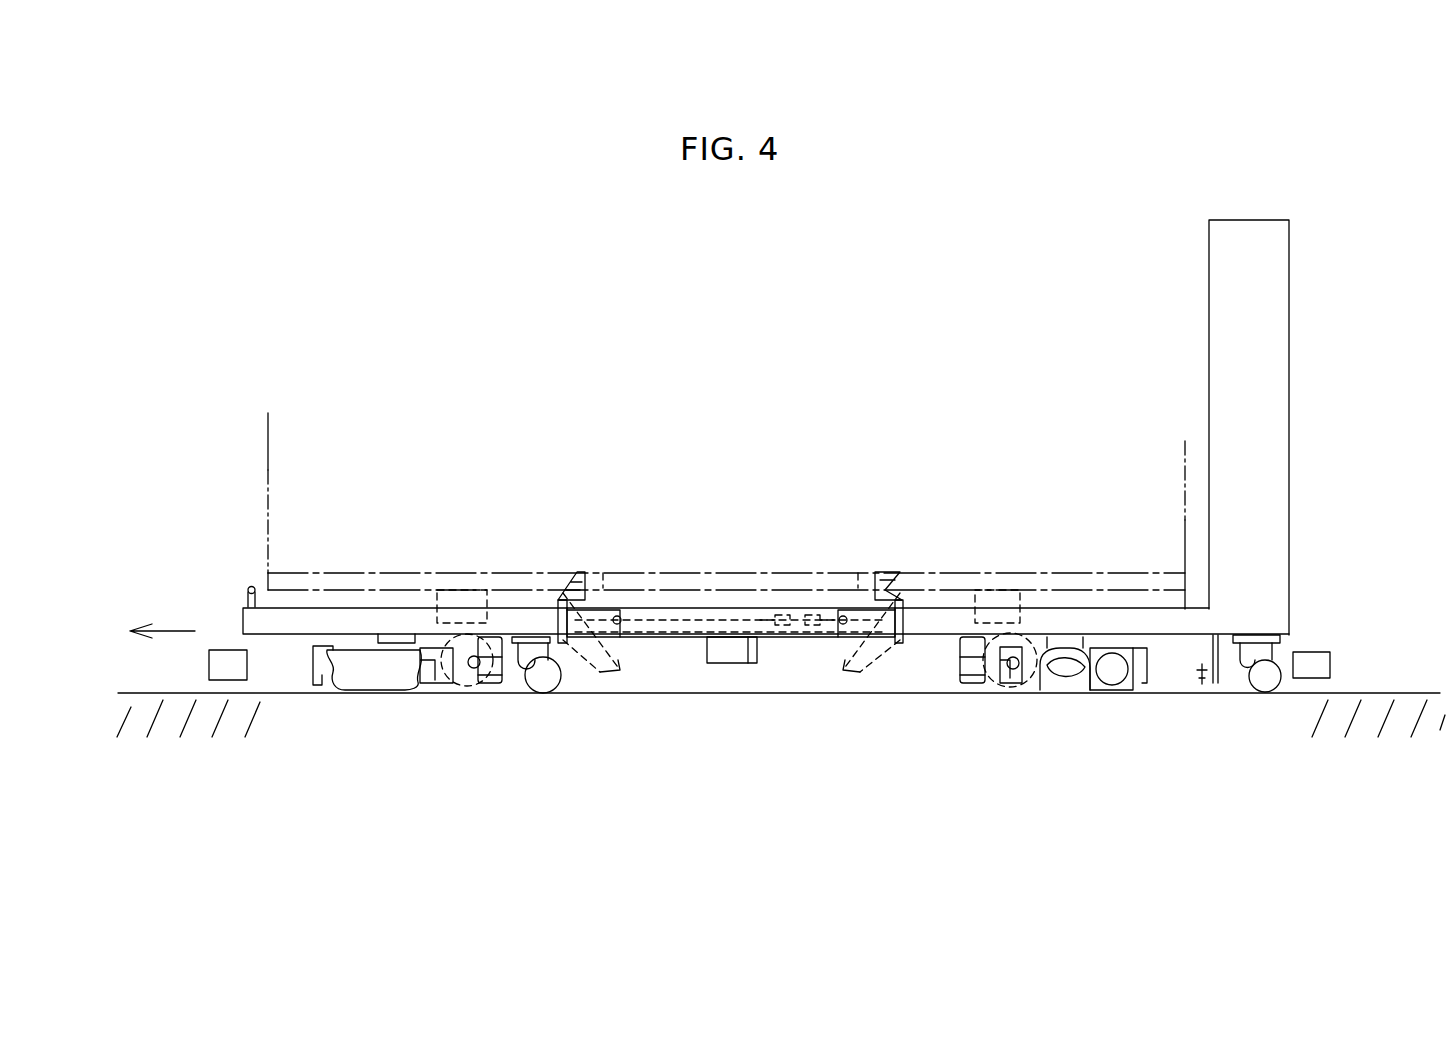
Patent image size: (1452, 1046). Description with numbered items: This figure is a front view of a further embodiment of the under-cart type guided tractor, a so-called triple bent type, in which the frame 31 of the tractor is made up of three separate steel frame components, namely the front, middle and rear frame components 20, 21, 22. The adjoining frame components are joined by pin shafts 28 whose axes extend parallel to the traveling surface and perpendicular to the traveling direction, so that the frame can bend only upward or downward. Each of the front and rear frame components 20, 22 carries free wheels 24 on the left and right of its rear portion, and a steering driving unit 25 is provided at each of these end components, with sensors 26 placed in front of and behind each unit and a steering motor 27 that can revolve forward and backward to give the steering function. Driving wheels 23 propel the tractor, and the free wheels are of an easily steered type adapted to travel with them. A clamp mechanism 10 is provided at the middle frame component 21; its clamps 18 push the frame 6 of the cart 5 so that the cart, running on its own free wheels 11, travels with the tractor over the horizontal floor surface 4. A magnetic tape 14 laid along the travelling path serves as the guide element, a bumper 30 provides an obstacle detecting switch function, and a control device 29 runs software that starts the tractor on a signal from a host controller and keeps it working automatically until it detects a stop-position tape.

The floor surface 4 is at (1345, 693).
The cart 5 is at (280, 434).
The frame 6 is at (595, 583).
The clamp mechanism 10 is at (680, 562).
The free wheels 11 is at (478, 700).
The magnetic tape 14 is at (1368, 692).
The clamps 18 is at (568, 576).
The front frame component 20 is at (487, 612).
The middle frame component 21 is at (765, 598).
The rear frame component 22 is at (1030, 600).
The driving wheels 23 is at (395, 695).
The free wheels 24 is at (548, 698).
The steering driving units 25 is at (355, 705).
The sensors 26 is at (315, 690).
The steering motors 27 is at (497, 695).
The pin shafts 28 is at (588, 667).
The control device 29 is at (1272, 354).
The bumper 30 is at (228, 662).
The frame 31 is at (833, 378).